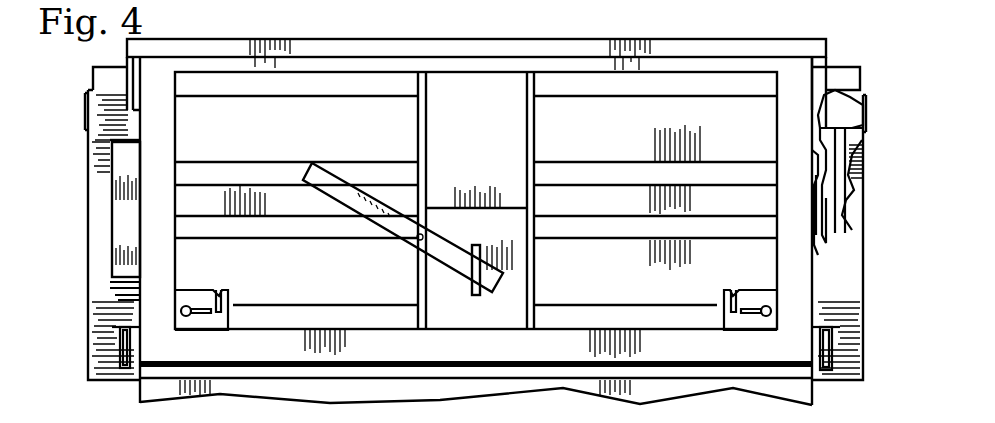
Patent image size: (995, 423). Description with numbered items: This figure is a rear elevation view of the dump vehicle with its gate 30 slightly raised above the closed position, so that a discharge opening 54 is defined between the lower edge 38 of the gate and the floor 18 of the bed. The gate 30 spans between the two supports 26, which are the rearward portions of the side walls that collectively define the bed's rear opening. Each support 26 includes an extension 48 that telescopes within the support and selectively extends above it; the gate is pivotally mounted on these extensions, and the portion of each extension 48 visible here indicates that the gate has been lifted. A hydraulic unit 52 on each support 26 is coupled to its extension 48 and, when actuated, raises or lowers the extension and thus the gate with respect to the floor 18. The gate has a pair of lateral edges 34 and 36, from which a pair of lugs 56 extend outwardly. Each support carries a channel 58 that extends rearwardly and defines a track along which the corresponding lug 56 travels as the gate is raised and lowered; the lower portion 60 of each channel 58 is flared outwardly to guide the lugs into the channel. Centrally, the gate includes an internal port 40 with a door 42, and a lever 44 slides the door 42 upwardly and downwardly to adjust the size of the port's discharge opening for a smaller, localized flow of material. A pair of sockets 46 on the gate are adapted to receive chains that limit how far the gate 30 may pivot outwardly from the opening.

The floor 18 is at (717, 369).
The support 26 is at (88, 235).
The gate 30 is at (509, 38).
The lateral edge 34 is at (135, 207).
The lateral edge 36 is at (816, 150).
The lower edge 38 is at (563, 371).
The internal port 40 is at (515, 206).
The door 42 is at (430, 206).
The lever 44 is at (333, 172).
The socket 46 is at (190, 290).
The extension 48 is at (93, 68).
The hydraulic unit 52 is at (848, 180).
The discharge opening 54 is at (482, 370).
The lug 56 is at (117, 292).
The channel 58 is at (110, 202).
The lower portion 60 is at (110, 283).